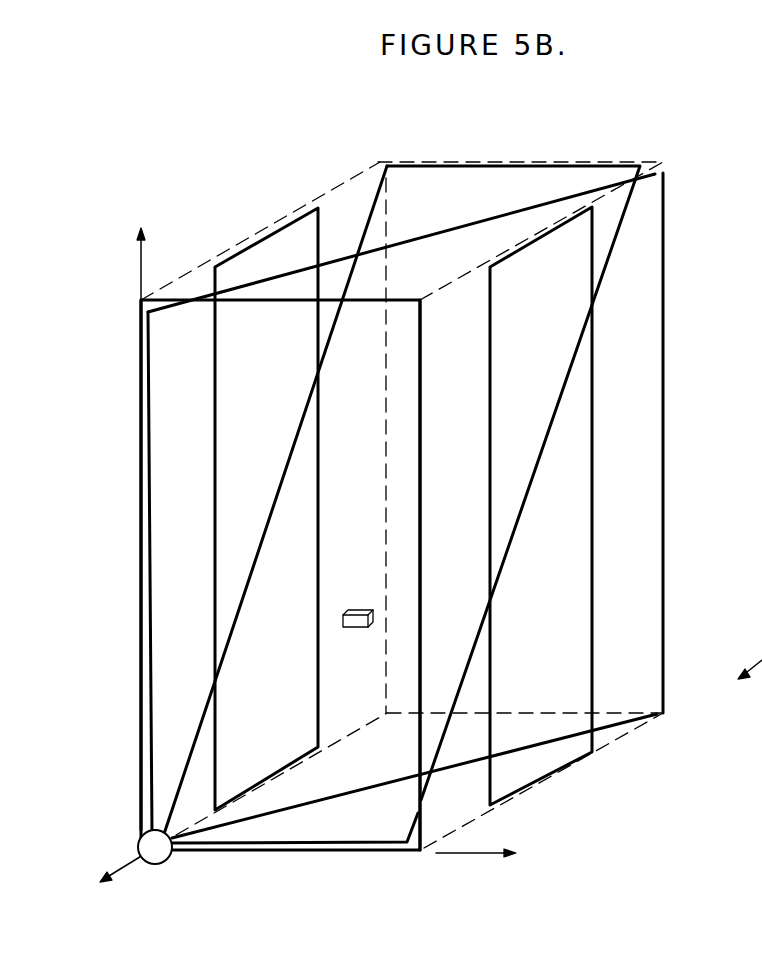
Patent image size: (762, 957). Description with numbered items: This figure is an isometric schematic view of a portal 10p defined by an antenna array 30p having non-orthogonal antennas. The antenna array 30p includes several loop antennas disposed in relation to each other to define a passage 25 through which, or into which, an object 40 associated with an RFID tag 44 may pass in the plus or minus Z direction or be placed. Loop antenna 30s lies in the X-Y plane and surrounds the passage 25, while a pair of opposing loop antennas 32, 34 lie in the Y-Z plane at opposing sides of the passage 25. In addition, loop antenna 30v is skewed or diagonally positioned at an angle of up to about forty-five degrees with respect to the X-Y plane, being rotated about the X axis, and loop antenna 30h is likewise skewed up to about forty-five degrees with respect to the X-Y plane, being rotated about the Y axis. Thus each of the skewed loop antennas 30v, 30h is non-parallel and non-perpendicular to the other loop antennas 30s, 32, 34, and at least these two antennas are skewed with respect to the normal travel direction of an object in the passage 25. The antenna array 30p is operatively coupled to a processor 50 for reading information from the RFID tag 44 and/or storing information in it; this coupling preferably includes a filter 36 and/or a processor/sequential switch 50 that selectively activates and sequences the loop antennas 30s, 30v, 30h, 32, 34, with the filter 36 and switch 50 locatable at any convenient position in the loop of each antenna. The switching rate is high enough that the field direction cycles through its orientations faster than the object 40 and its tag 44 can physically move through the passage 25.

The portal 10p is at (258, 160).
The antenna array 30p is at (663, 789).
The loop antenna 30v is at (512, 165).
The loop antenna 30h is at (450, 227).
The loop antenna 30s is at (143, 494).
The loop antenna 34 is at (218, 384).
The loop antenna 32 is at (490, 344).
The passage 25 is at (412, 510).
The object 40 is at (363, 638).
The RFID tag 44 is at (355, 628).
The filter 36 is at (183, 875).
The processor/sequential switch 50 is at (165, 866).